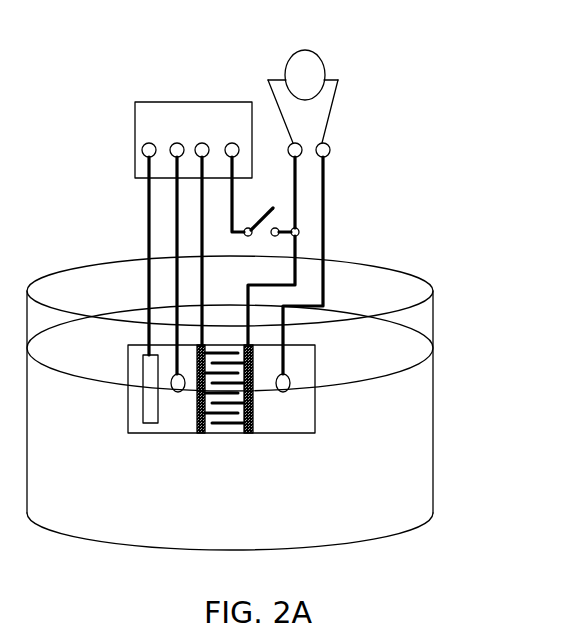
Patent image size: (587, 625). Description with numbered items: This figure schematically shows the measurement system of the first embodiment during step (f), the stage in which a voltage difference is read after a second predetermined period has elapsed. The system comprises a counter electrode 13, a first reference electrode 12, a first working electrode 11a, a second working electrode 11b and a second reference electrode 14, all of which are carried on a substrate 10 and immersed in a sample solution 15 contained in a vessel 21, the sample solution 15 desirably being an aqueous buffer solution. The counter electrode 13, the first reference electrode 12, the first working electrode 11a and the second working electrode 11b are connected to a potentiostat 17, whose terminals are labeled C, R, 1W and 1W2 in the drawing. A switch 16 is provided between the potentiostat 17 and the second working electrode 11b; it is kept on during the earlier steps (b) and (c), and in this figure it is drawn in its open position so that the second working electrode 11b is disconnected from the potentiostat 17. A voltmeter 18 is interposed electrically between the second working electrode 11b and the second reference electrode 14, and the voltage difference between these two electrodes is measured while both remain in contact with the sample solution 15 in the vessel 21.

The substrate 10 is at (128, 433).
The first working electrode 11a is at (203, 434).
The second working electrode 11b is at (243, 434).
The first reference electrode 12 is at (181, 392).
The counter electrode 13 is at (145, 399).
The second reference electrode 14 is at (285, 393).
The sample solution 15 is at (420, 415).
The switch 16 is at (263, 214).
The potentiostat 17 is at (160, 112).
The voltmeter 18 is at (307, 60).
The vessel 21 is at (405, 281).